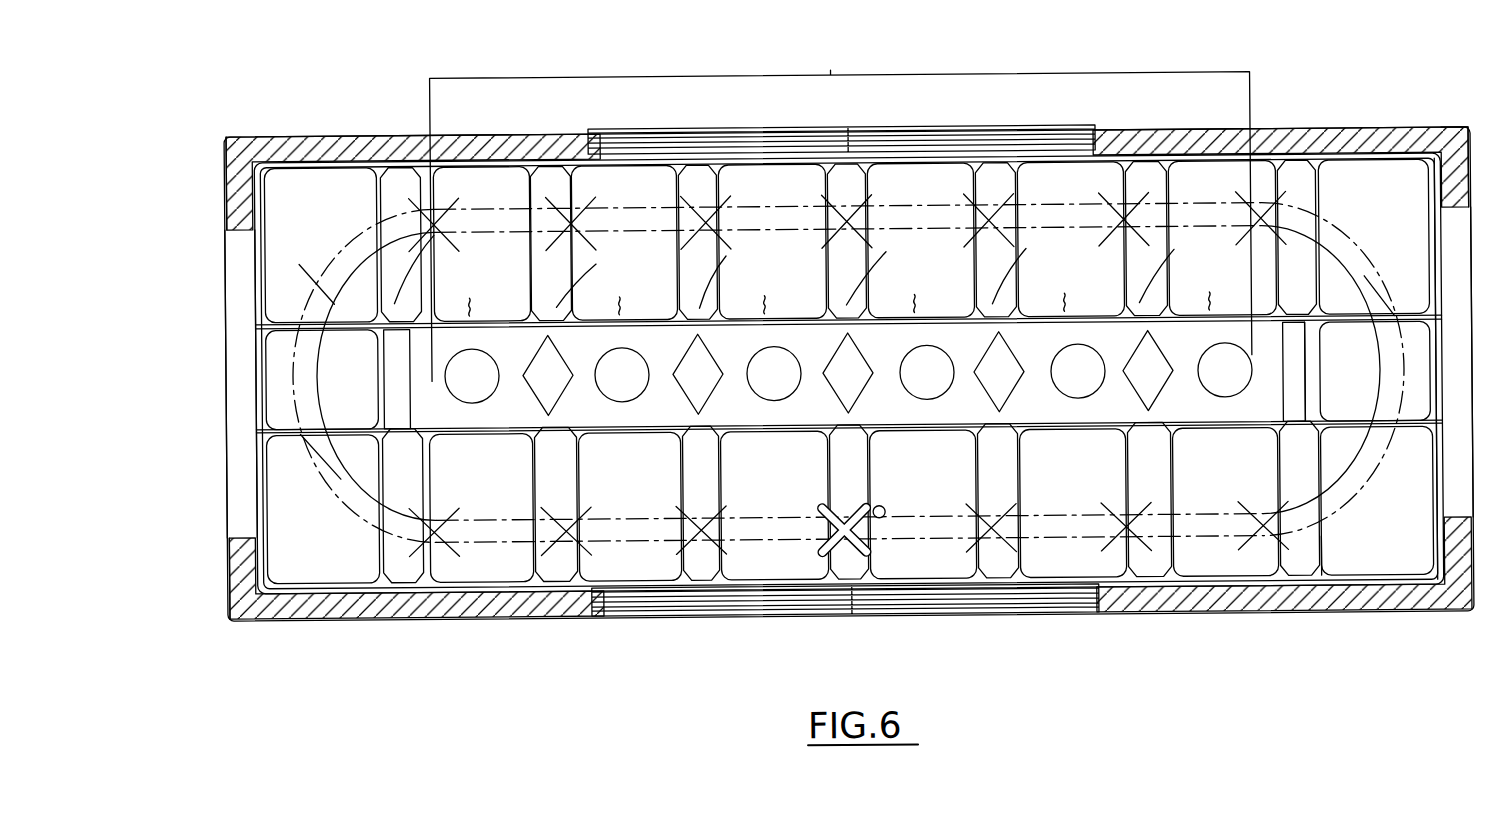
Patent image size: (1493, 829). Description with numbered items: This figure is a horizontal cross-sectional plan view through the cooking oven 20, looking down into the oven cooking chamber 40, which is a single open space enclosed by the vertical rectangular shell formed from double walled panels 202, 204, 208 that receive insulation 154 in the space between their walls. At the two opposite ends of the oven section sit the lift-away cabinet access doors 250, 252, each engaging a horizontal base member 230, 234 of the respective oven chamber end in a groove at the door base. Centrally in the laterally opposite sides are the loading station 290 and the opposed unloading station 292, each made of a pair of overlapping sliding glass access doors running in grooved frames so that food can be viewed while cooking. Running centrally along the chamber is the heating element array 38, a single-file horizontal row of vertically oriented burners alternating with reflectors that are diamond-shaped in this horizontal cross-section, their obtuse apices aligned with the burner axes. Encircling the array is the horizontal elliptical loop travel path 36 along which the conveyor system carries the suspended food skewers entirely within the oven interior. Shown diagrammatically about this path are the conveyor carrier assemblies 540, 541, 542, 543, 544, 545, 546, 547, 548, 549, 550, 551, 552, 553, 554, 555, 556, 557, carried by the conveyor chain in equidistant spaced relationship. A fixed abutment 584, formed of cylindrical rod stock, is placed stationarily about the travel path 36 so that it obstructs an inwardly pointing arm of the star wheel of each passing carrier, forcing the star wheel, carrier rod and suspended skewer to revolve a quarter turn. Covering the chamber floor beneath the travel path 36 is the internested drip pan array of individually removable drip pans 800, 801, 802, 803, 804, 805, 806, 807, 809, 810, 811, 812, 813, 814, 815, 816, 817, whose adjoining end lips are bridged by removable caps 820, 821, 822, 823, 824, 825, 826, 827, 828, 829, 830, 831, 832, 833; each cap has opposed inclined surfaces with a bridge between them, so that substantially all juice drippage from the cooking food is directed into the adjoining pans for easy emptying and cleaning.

The cooking oven 20 is at (200, 80).
The horizontal elliptical loop travel path 36 is at (849, 398).
The heating element array 38 is at (840, 207).
The oven cooking chamber 40 is at (313, 566).
The insulation 154 is at (297, 140).
The double walled panel 202 is at (233, 548).
The double walled panel 204 is at (228, 188).
The double walled panel 208 is at (1468, 134).
The horizontal base member 230 is at (236, 380).
The horizontal base member 234 is at (1440, 228).
The cabinet access door 250 is at (226, 316).
The cabinet access door 252 is at (1478, 495).
The loading station 290 is at (670, 628).
The unloading station 292 is at (746, 126).
The conveyor carrier assembly 540 is at (707, 212).
The conveyor carrier assembly 541 is at (590, 212).
The conveyor carrier assembly 542 is at (450, 212).
The conveyor carrier assembly 543 is at (307, 271).
The conveyor carrier assembly 544 is at (352, 438).
The conveyor carrier assembly 545 is at (452, 525).
The conveyor carrier assembly 546 is at (585, 522).
The conveyor carrier assembly 547 is at (728, 525).
The conveyor carrier assembly 548 is at (820, 550).
The conveyor carrier assembly 549 is at (1020, 522).
The conveyor carrier assembly 550 is at (1150, 520).
The conveyor carrier assembly 551 is at (1238, 522).
The conveyor carrier assembly 552 is at (1376, 500).
The conveyor carrier assembly 553 is at (1388, 292).
The conveyor carrier assembly 554 is at (1280, 192).
The conveyor carrier assembly 555 is at (1140, 208).
The conveyor carrier assembly 556 is at (1015, 212).
The conveyor carrier assembly 557 is at (865, 212).
The fixed abutment 584 is at (886, 513).
The drip pan 800 is at (262, 520).
The drip pan 801 is at (458, 432).
The drip pan 802 is at (608, 432).
The drip pan 803 is at (756, 432).
The drip pan 804 is at (912, 430).
The drip pan 805 is at (1062, 430).
The drip pan 806 is at (1208, 430).
The drip pan 807 is at (1345, 556).
The drip pan 809 is at (1305, 378).
The drip pan 810 is at (374, 196).
The drip pan 811 is at (481, 244).
The drip pan 812 is at (624, 242).
The drip pan 813 is at (772, 241).
The drip pan 814 is at (920, 240).
The drip pan 815 is at (1070, 239).
The drip pan 816 is at (1222, 237).
The drip pan 817 is at (1422, 194).
The cap 820 is at (338, 380).
The cap 821 is at (563, 478).
The cap 822 is at (715, 478).
The cap 823 is at (865, 472).
The cap 824 is at (1015, 475).
The cap 825 is at (1165, 477).
The cap 826 is at (1378, 455).
The cap 827 is at (378, 255).
The cap 828 is at (604, 272).
The cap 829 is at (744, 271).
The cap 830 is at (891, 269).
The cap 831 is at (1035, 268).
The cap 832 is at (1183, 267).
The cap 833 is at (1297, 298).